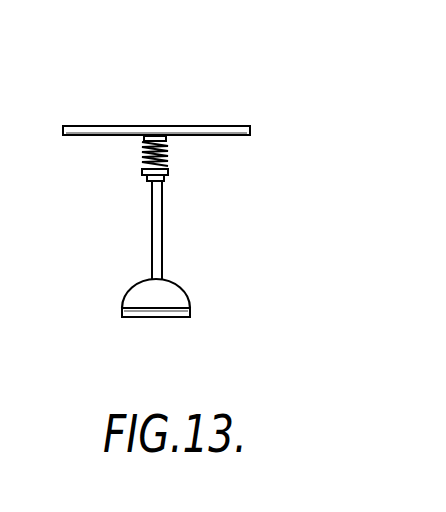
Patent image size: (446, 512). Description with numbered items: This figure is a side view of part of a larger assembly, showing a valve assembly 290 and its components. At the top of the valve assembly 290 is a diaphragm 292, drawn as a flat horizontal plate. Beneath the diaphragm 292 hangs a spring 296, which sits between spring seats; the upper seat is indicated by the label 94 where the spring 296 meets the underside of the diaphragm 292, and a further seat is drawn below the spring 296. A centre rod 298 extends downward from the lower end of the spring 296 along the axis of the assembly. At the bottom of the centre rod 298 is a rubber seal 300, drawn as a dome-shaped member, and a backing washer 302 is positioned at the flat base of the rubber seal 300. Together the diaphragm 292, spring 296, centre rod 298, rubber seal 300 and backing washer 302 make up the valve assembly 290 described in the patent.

The valve assembly 290 is at (91, 86).
The diaphragm 292 is at (208, 126).
The retainer 94 is at (142, 138).
The spring 296 is at (171, 160).
The centre rod 298 is at (163, 240).
The rubber seal 300 is at (190, 303).
The backing washer 302 is at (122, 313).